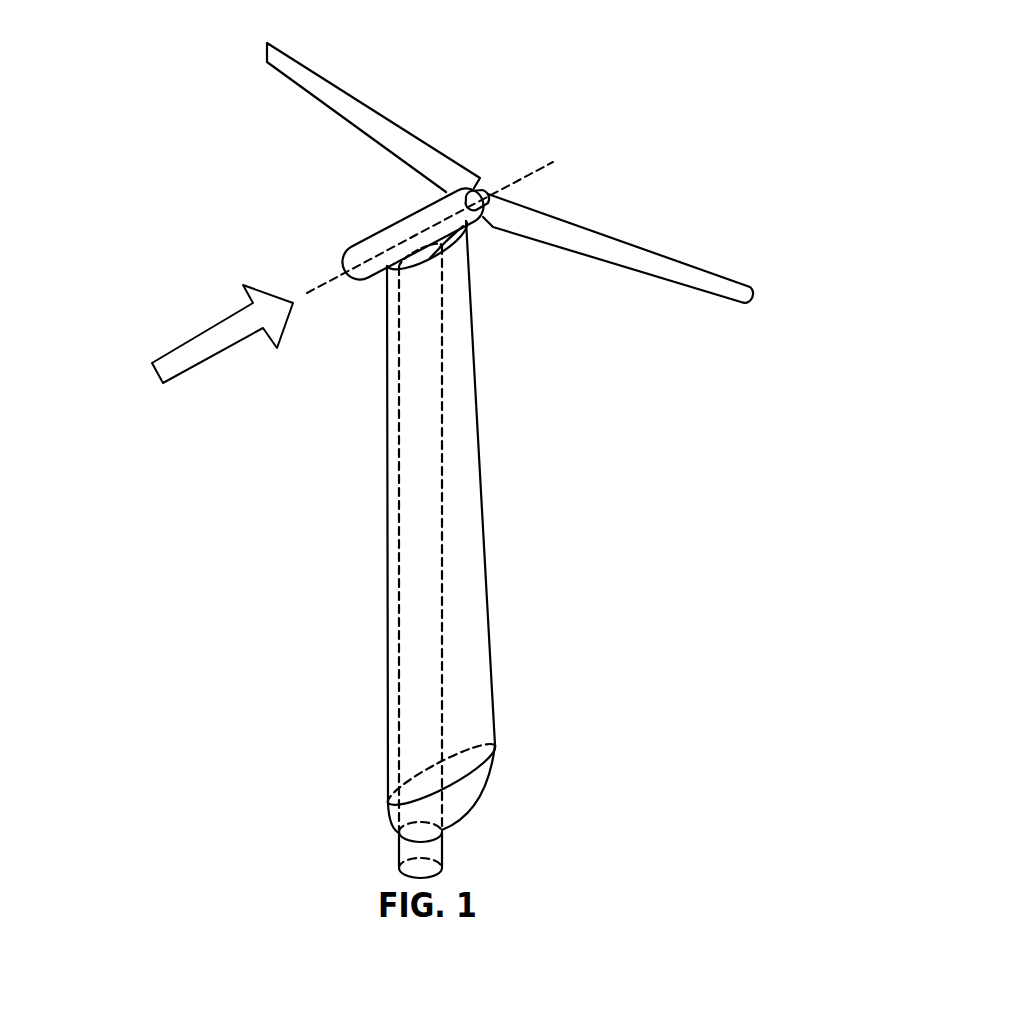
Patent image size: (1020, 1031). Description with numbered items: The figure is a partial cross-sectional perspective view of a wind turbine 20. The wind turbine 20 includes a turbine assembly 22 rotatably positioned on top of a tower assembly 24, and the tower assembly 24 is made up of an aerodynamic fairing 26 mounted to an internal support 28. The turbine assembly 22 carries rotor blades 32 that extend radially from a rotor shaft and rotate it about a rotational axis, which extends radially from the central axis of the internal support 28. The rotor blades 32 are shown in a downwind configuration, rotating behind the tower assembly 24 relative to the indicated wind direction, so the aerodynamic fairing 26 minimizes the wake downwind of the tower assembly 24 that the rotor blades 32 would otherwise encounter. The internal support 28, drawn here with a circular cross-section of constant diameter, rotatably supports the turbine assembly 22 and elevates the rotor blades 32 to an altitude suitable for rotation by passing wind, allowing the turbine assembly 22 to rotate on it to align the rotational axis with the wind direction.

The wind turbine 20 is at (588, 40).
The turbine assembly 22 is at (319, 192).
The tower assembly 24 is at (522, 792).
The aerodynamic fairing 26 is at (465, 415).
The internal support 28 is at (400, 630).
The rotor blade 32 is at (270, 65).